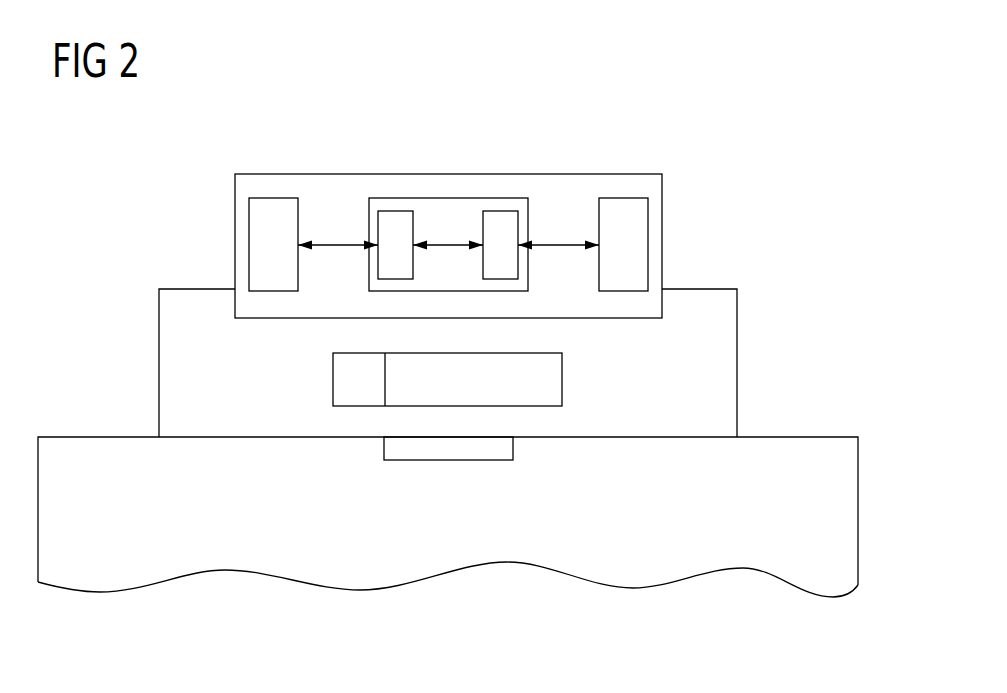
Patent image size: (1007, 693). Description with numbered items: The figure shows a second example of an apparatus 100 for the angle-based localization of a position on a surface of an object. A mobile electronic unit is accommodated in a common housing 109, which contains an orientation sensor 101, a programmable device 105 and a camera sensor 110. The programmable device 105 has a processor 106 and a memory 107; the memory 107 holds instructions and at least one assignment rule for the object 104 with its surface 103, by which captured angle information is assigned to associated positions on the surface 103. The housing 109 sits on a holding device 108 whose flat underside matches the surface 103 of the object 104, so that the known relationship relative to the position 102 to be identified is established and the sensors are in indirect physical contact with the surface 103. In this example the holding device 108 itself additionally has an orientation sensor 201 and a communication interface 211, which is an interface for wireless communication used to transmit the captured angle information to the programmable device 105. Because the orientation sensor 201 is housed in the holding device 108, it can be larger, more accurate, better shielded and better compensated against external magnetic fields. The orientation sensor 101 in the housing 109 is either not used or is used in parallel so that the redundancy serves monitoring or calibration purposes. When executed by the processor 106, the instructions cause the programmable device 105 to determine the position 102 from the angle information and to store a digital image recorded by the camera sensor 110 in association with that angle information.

The apparatus 100 is at (688, 133).
The orientation sensor 101 is at (273, 210).
The position to be identified 102 is at (440, 449).
The surface 103 is at (85, 437).
The object 104 is at (803, 458).
The programmable device 105 is at (447, 208).
The processor 106 is at (392, 223).
The memory 107 is at (505, 223).
The holding device 108 is at (705, 302).
The housing 109 is at (332, 185).
The camera sensor 110 is at (630, 207).
The orientation sensor 201 is at (542, 378).
The communication interface 211 is at (349, 378).